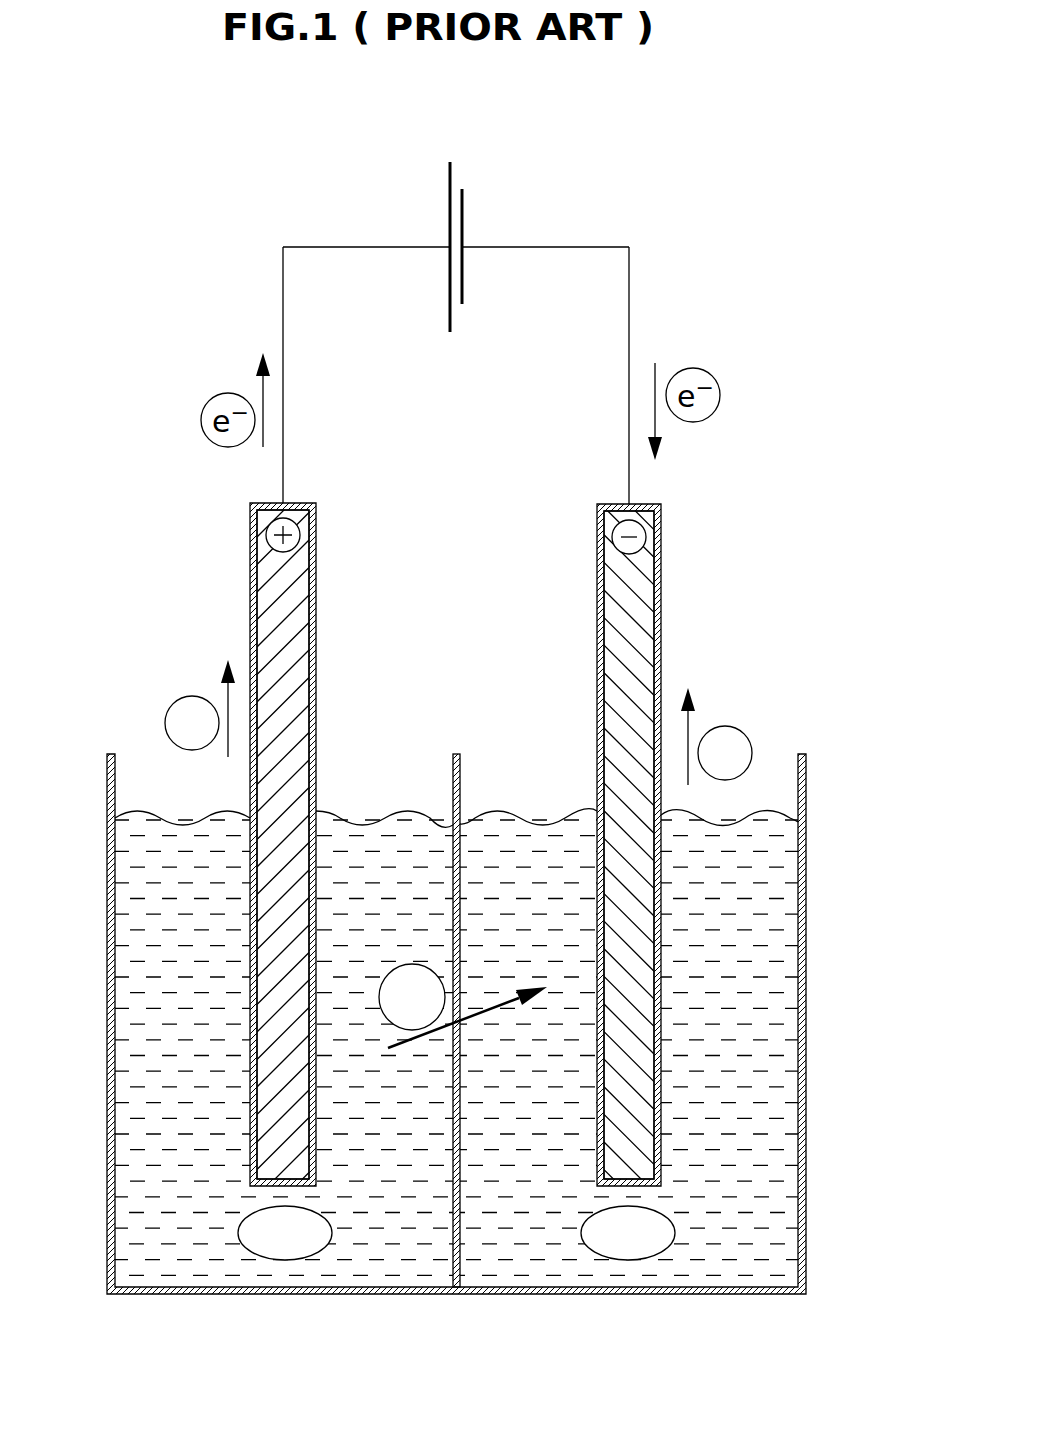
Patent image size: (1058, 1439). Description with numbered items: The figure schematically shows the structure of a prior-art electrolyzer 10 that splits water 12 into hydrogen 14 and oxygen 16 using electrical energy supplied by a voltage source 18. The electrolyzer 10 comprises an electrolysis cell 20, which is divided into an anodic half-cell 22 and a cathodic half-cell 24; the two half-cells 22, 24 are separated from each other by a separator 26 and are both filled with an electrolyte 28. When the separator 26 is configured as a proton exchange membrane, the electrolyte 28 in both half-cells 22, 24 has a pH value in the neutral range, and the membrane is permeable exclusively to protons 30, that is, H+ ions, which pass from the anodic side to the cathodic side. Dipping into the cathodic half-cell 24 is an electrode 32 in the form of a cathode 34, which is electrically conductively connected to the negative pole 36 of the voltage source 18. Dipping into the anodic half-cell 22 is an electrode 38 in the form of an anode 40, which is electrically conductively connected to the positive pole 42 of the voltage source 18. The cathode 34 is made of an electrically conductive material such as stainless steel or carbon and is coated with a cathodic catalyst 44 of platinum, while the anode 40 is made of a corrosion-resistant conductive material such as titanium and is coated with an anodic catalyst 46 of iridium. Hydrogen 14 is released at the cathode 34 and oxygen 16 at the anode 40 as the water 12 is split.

The electrolyzer 10 is at (713, 296).
The water 12 is at (305, 1259).
The hydrogen 14 is at (744, 734).
The oxygen 16 is at (173, 704).
The voltage source 18 is at (456, 231).
The electrolysis cell 20 is at (830, 760).
The anodic half-cell 22 is at (355, 687).
The cathodic half-cell 24 is at (725, 658).
The separator 26 is at (462, 760).
The electrolyte 28 is at (137, 910).
The protons 30 is at (412, 964).
The electrode 32 is at (640, 590).
The cathode 34 is at (611, 603).
The negative pole 36 is at (463, 293).
The electrode 38 is at (284, 603).
The anode 40 is at (303, 557).
The positive pole 42 is at (449, 309).
The cathodic catalyst 44 is at (661, 507).
The anodic catalyst 46 is at (250, 511).